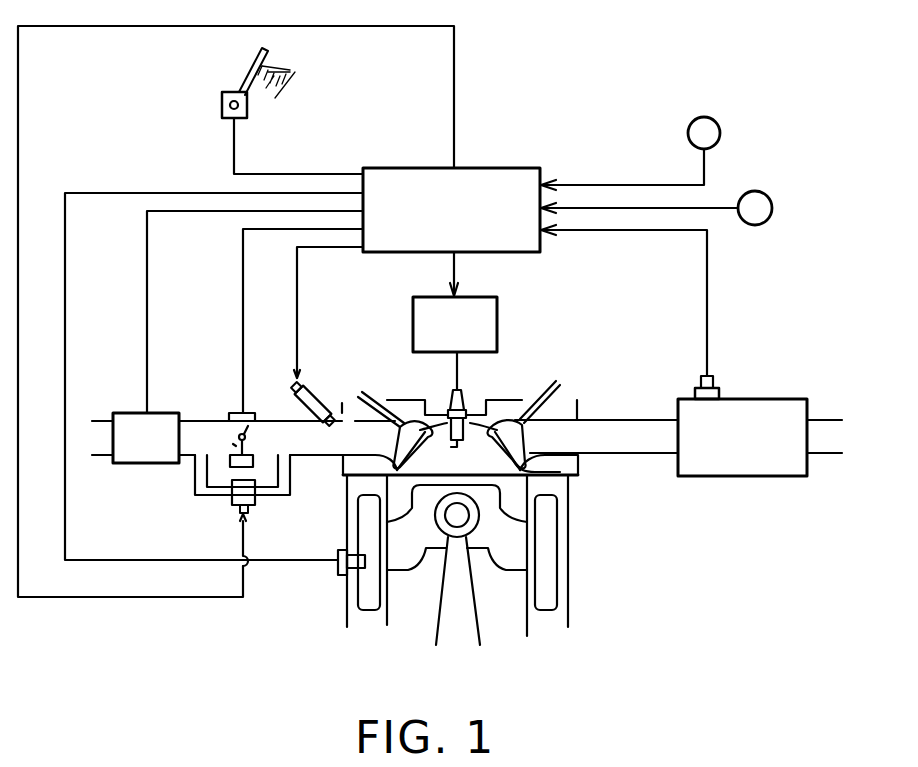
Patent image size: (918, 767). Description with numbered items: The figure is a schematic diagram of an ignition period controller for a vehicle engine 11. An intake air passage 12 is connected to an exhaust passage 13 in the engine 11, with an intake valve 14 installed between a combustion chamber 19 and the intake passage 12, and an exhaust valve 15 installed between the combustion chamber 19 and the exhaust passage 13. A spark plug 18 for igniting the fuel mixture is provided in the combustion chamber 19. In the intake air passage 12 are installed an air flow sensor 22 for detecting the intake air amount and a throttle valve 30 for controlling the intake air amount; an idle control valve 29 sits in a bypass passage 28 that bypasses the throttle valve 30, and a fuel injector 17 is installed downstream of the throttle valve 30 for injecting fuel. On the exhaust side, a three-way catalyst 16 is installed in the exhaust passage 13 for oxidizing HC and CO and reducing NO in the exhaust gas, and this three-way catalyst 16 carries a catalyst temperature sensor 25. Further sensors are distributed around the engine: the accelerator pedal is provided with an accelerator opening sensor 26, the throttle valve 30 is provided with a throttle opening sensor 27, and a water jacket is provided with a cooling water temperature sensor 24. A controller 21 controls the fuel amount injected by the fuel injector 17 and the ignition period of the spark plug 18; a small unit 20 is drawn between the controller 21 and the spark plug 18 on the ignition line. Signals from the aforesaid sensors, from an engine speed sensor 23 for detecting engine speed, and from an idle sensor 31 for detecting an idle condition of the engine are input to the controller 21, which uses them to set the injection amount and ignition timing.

The vehicle engine 11 is at (569, 556).
The intake air passage 12 is at (213, 430).
The exhaust passage 13 is at (613, 427).
The intake valve 14 is at (400, 420).
The exhaust valve 15 is at (525, 425).
The three-way catalyst 16 is at (750, 478).
The fuel injector 17 is at (316, 392).
The spark plug 18 is at (466, 425).
The combustion chamber 19 is at (560, 472).
The ignition unit 20 is at (413, 316).
The controller 21 is at (483, 172).
The air flow sensor 22 is at (135, 423).
The engine speed sensor 23 is at (716, 130).
The cooling water temperature sensor 24 is at (338, 568).
The catalyst temperature sensor 25 is at (718, 390).
The accelerator opening sensor 26 is at (222, 107).
The throttle opening sensor 27 is at (250, 413).
The bypass passage 28 is at (196, 475).
The idle control valve 29 is at (232, 500).
The throttle valve 30 is at (248, 427).
The idle sensor 31 is at (766, 213).